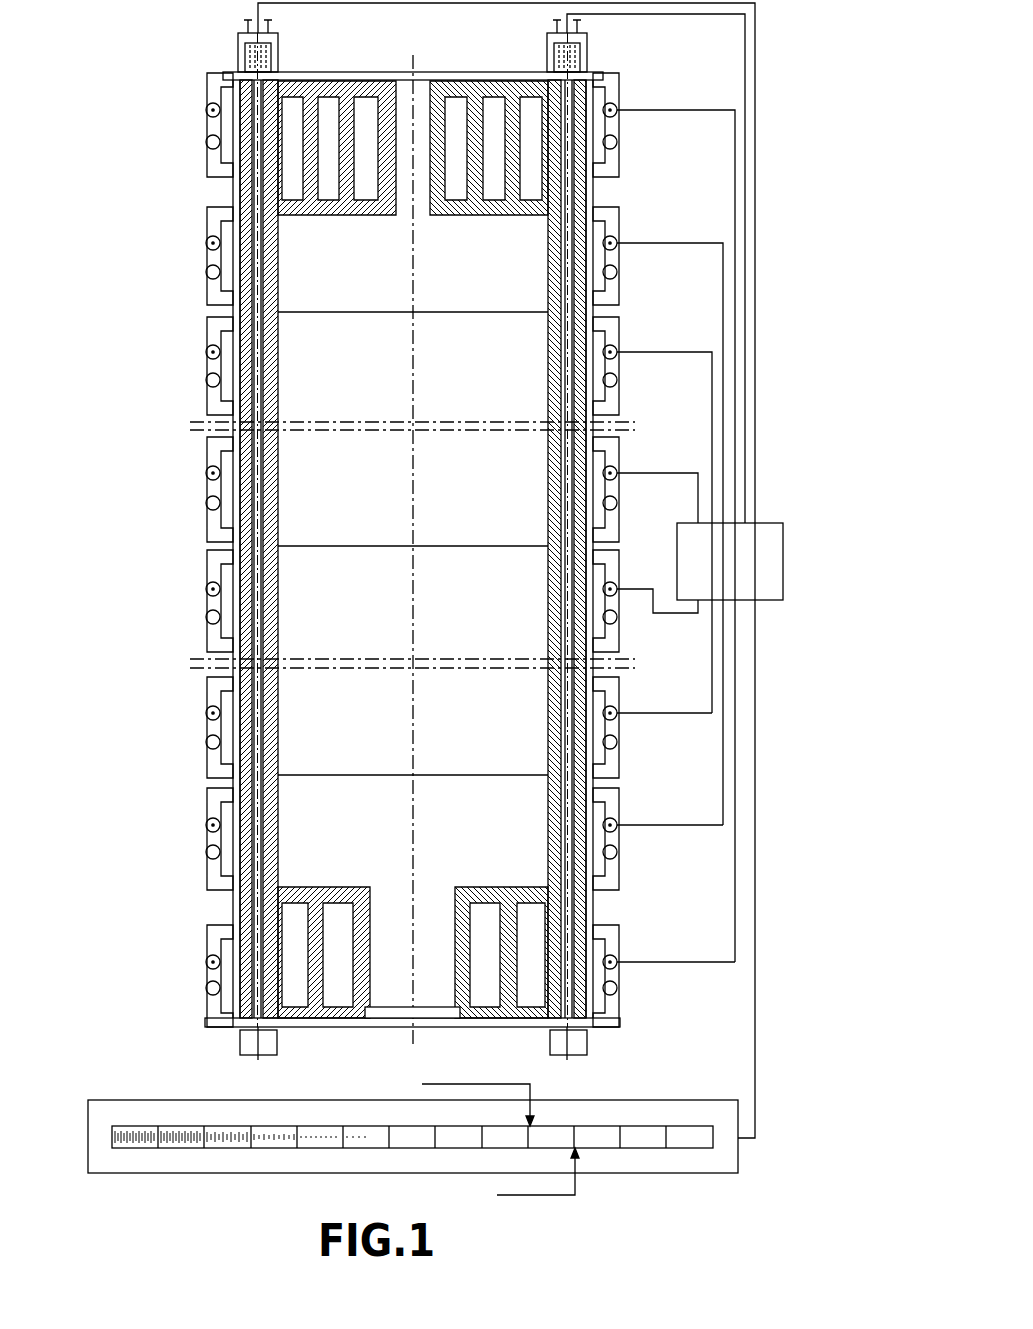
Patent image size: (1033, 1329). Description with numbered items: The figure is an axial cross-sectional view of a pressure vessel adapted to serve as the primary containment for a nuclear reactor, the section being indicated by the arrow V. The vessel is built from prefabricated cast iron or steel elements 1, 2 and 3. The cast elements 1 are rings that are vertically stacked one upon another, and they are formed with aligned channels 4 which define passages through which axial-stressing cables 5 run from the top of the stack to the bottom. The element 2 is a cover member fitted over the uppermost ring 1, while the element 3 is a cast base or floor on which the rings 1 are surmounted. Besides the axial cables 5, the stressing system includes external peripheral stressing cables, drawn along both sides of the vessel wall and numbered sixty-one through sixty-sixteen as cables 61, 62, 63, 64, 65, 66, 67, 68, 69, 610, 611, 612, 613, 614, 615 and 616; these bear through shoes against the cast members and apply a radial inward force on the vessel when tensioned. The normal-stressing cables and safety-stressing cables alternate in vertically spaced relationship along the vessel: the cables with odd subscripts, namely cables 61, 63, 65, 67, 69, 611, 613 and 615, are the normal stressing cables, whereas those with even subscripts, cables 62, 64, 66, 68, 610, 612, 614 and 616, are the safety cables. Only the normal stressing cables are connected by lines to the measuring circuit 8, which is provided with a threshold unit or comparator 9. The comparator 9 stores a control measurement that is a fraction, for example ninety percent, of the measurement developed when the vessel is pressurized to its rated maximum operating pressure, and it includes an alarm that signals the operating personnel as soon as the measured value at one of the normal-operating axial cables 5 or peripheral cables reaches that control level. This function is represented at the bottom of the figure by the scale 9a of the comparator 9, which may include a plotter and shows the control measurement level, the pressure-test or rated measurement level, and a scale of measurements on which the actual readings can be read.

The cast element ring 1 is at (412, 540).
The cover member 2 is at (381, 86).
The cast base 3 is at (493, 887).
The aligned channel 4 is at (278, 278).
The axial-stressing cable 5 is at (257, 618).
The normal stressing peripheral cable 61 is at (615, 105).
The safety stressing peripheral cable 62 is at (617, 142).
The normal stressing peripheral cable 63 is at (615, 238).
The safety stressing peripheral cable 64 is at (617, 272).
The normal stressing peripheral cable 65 is at (615, 347).
The safety stressing peripheral cable 66 is at (617, 380).
The normal stressing peripheral cable 67 is at (615, 468).
The safety stressing peripheral cable 68 is at (617, 503).
The normal stressing peripheral cable 69 is at (615, 584).
The safety stressing peripheral cable 610 is at (617, 617).
The normal stressing peripheral cable 611 is at (615, 708).
The safety stressing peripheral cable 612 is at (617, 742).
The normal stressing peripheral cable 613 is at (615, 820).
The safety stressing peripheral cable 614 is at (617, 852).
The normal stressing peripheral cable 615 is at (615, 957).
The safety stressing peripheral cable 616 is at (617, 988).
The measuring circuit 8 is at (732, 576).
The threshold unit or comparator 9 is at (413, 1119).
The scale 9a is at (178, 1135).
The section view indicator V is at (220, 48).